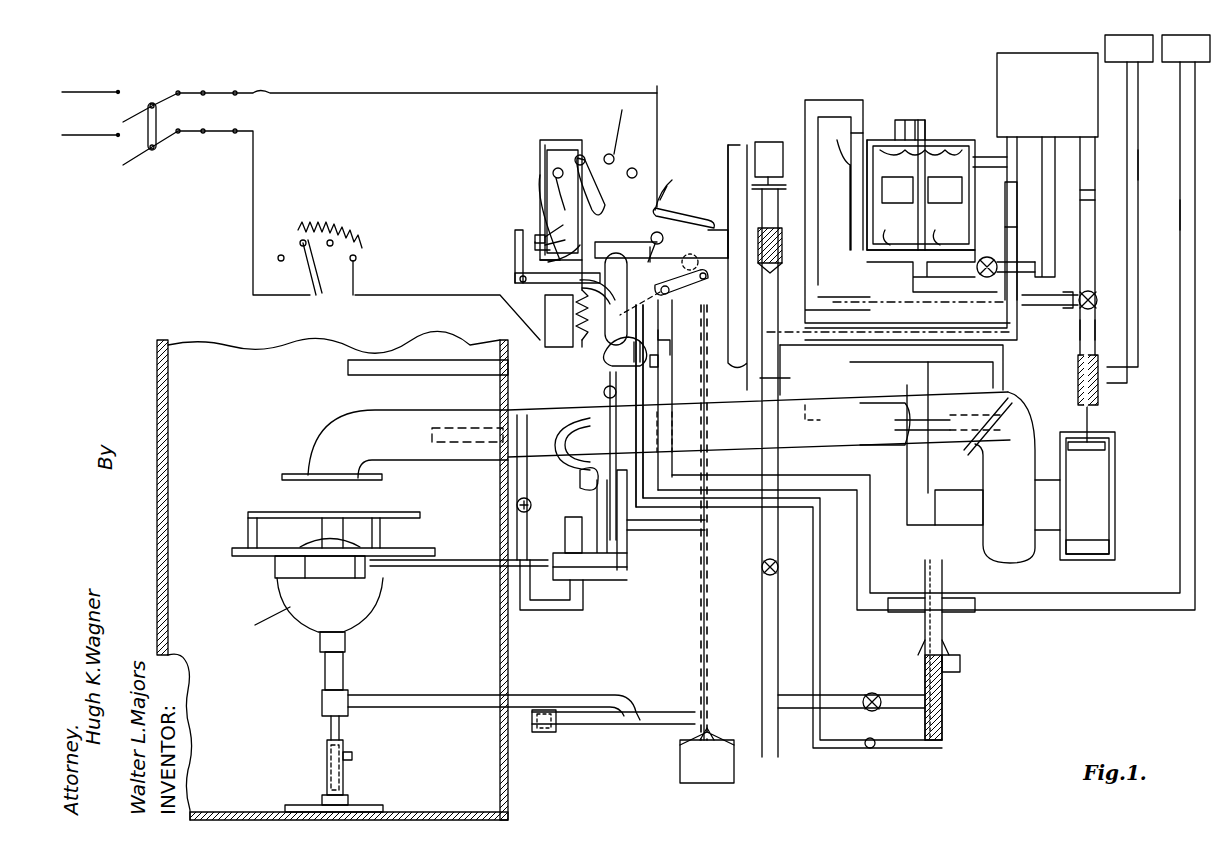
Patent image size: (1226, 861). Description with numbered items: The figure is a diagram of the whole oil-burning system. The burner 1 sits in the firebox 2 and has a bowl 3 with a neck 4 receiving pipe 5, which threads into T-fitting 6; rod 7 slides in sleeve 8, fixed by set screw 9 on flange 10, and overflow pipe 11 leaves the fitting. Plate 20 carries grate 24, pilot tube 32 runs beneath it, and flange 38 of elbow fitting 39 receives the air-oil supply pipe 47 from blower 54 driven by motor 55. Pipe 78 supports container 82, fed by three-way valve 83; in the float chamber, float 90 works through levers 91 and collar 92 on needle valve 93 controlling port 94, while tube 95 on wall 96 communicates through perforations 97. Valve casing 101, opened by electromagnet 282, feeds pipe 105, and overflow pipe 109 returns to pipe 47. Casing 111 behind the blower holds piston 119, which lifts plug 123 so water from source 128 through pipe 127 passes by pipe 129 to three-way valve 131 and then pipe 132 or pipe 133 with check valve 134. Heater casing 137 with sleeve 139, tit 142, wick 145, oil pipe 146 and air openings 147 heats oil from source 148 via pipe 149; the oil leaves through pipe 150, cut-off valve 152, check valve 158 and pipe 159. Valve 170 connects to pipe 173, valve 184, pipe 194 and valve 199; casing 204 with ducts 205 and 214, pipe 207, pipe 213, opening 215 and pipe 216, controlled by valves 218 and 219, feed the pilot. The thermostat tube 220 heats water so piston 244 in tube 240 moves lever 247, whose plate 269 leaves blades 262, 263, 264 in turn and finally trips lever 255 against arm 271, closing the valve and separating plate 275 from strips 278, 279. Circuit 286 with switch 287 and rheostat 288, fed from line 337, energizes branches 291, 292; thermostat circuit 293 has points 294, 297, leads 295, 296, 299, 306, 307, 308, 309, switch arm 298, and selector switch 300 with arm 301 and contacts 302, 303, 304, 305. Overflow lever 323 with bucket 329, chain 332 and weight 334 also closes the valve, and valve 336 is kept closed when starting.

The burner 1 is at (258, 627).
The firebox 2 is at (332, 575).
The bowl or basin 3 is at (362, 612).
The neck 4 is at (345, 645).
The vertical pipe 5 is at (343, 670).
The T-fitting 6 is at (322, 705).
The vertical rod 7 is at (331, 730).
The sleeve or hollow stem 8 is at (327, 760).
The set screw 9 is at (352, 756).
The supporting flange 10 is at (285, 806).
The overflow pipe 11 is at (400, 715).
The horizontal plate 20 is at (232, 552).
The grate 24 is at (250, 518).
The pilot tube or pipe 32 is at (428, 568).
The flange 38 is at (282, 477).
The elbow pipe fitting 39 is at (408, 444).
The pipe 47 is at (759, 301).
The air blower 54 is at (1017, 477).
The electric motor 55 is at (945, 443).
The vertical pipe 78 is at (1050, 182).
The container 82 is at (1047, 95).
The three-way valve 83 is at (990, 257).
The float 90 is at (897, 203).
The levers 91 is at (885, 147).
The flanged collar 92 is at (930, 206).
The needle valve 93 is at (945, 236).
The valve port 94 is at (913, 270).
The vertical tube 95 is at (858, 213).
The lateral wall 96 is at (858, 195).
The perforations 97 is at (893, 236).
The valve casing 101 is at (782, 230).
The pipe 105 is at (940, 352).
The pipe 109 is at (1022, 323).
The vertical tubular casing 111 is at (1115, 502).
The piston 119 is at (1080, 450).
The valve plug 123 is at (1078, 367).
The pipe 127 is at (1138, 152).
The source of water 128 is at (1129, 209).
The pipe 129 is at (1096, 346).
The three-way valve 131 is at (1094, 294).
The pipe 132 is at (835, 100).
The pipe 133 is at (1092, 232).
The check valve 134 is at (1099, 191).
The cylindrical vertical casing 137 is at (945, 596).
The hollow sleeve 139 is at (944, 578).
The conical protuberance or burner tit 142 is at (950, 650).
The asbestos wick 145 is at (950, 700).
The pipe 146 is at (850, 755).
The openings 147 is at (960, 662).
The source of oil 148 is at (934, 322).
The pipe 149 is at (1182, 228).
The pipe 150 is at (868, 603).
The cut-off valve 152 is at (666, 403).
The check valve 158 is at (1005, 208).
The pipe 159 is at (858, 350).
The valve 170 is at (576, 488).
The depending pipe 173 is at (903, 698).
The valve 184 is at (872, 693).
The pipe 194 is at (656, 532).
The valve 199 is at (762, 567).
The casing 204 is at (605, 582).
The duct 205 is at (632, 568).
The pipe 207 is at (536, 565).
The pipe 213 is at (610, 418).
The second duct 214 is at (580, 528).
The small opening 215 is at (590, 598).
The pipe 216 is at (517, 477).
The valve 218 is at (593, 456).
The valve 219 is at (528, 500).
The tube 220 is at (428, 367).
The vertical cylinder or tube 240 is at (559, 321).
The hollow piston 244 is at (512, 298).
The lever 247 is at (514, 262).
The lever 255 is at (620, 300).
The blade 262 is at (535, 237).
The blade 263 is at (570, 231).
The blade 264 is at (570, 248).
The electrically conducting plate 269 is at (535, 225).
The arm 271 is at (702, 278).
The electrode plate 275 is at (635, 360).
The resilient metallic strip 278 is at (678, 360).
The resilient metallic strip 279 is at (616, 358).
The electro-magnet 282 is at (765, 142).
The electric circuit 286 is at (270, 96).
The main switch 287 is at (162, 150).
The rheostat 288 is at (330, 222).
The branch circuit 291 is at (918, 512).
The branch circuit 292 is at (740, 150).
The thermostat circuit 293 is at (535, 180).
The terminal point 294 is at (652, 252).
The lead 295 is at (720, 228).
The lead 296 is at (670, 271).
The terminal point 297 is at (677, 179).
The switch arm 298 is at (678, 206).
The lead 299 is at (636, 236).
The switch 300 is at (618, 119).
The switch arm 301 is at (590, 193).
The contact 302 is at (572, 195).
The contact 303 is at (600, 168).
The contact 304 is at (612, 154).
The contact 305 is at (635, 168).
The lead 306 is at (555, 140).
The lead 307 is at (545, 148).
The lead 308 is at (545, 165).
The lead 309 is at (661, 227).
The lever 323 is at (660, 724).
The bucket 329 is at (707, 755).
The chain 332 is at (701, 650).
The weight 334 is at (545, 732).
The valve 336 is at (870, 748).
The line 337 is at (88, 100).